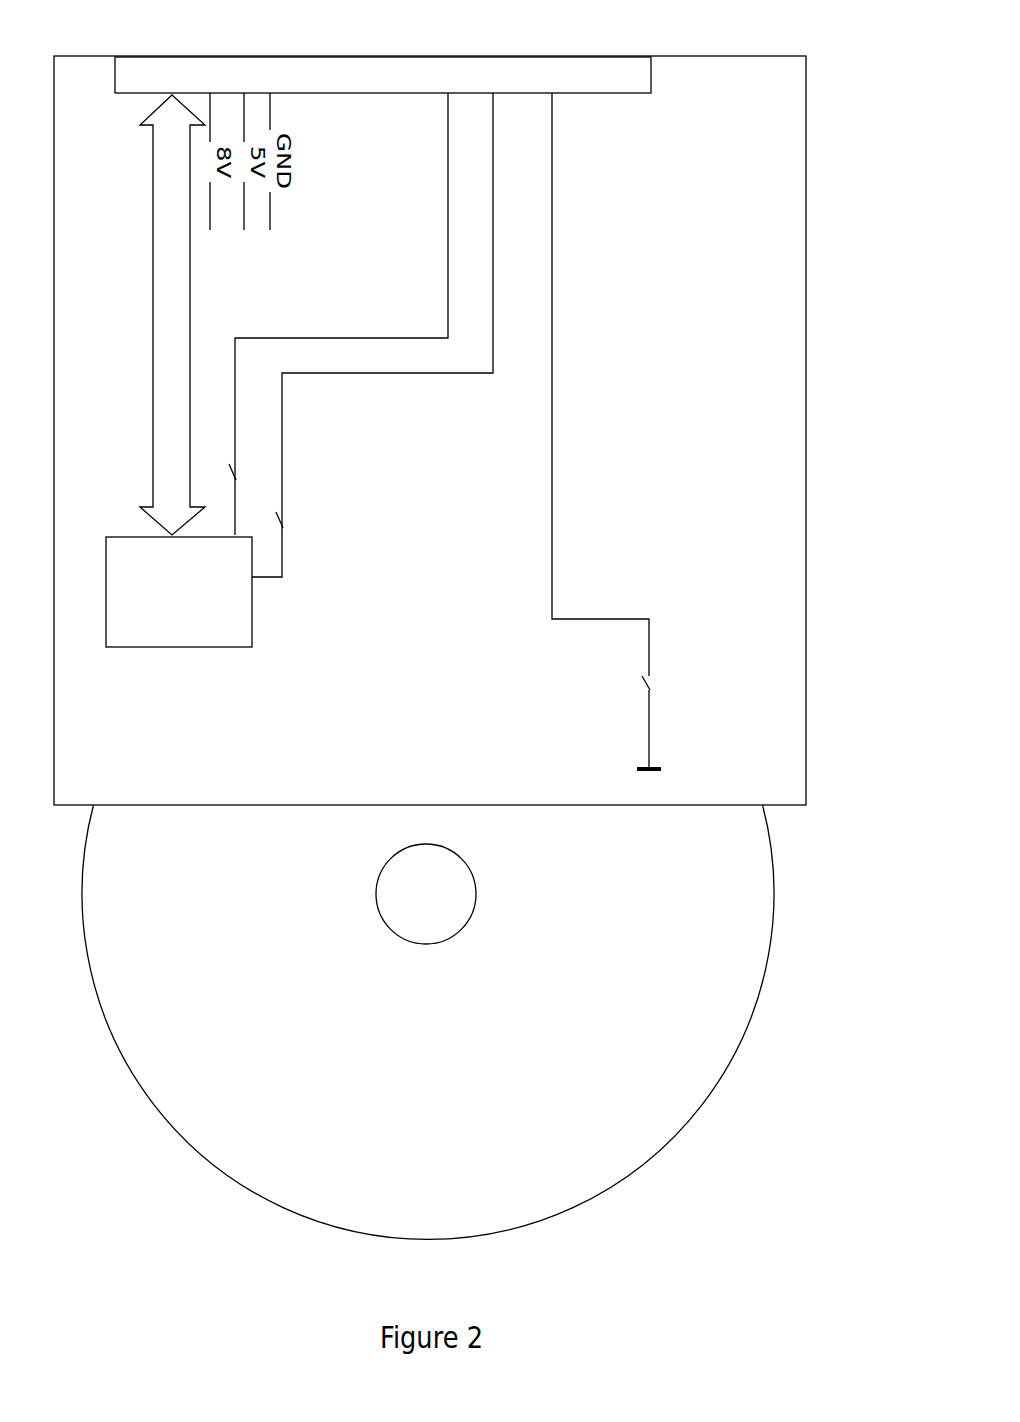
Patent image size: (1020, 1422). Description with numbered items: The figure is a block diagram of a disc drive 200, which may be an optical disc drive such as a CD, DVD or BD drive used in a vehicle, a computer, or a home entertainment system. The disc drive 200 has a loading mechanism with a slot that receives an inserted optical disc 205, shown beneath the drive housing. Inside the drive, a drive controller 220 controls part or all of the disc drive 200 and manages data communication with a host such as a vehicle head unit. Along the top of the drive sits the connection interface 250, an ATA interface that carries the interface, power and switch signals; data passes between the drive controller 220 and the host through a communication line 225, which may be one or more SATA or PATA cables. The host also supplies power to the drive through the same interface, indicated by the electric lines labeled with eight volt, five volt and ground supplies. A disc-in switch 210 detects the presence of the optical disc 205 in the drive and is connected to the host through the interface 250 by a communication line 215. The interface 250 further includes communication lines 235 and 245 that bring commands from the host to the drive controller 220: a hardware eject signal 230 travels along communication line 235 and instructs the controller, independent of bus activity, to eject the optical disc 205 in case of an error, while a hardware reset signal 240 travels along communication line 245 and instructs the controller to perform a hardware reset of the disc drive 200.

The disc drive 200 is at (838, 534).
The optical disc 205 is at (130, 1063).
The disc-in switch 210 is at (665, 680).
The communication line 215 is at (561, 446).
The drive controller 220 is at (176, 652).
The communication line 225 is at (156, 180).
The hardware eject signal 230 is at (362, 454).
The communication line 235 is at (445, 182).
The hardware reset signal 240 is at (378, 533).
The communication line 245 is at (505, 235).
The connection interface 250 is at (516, 56).